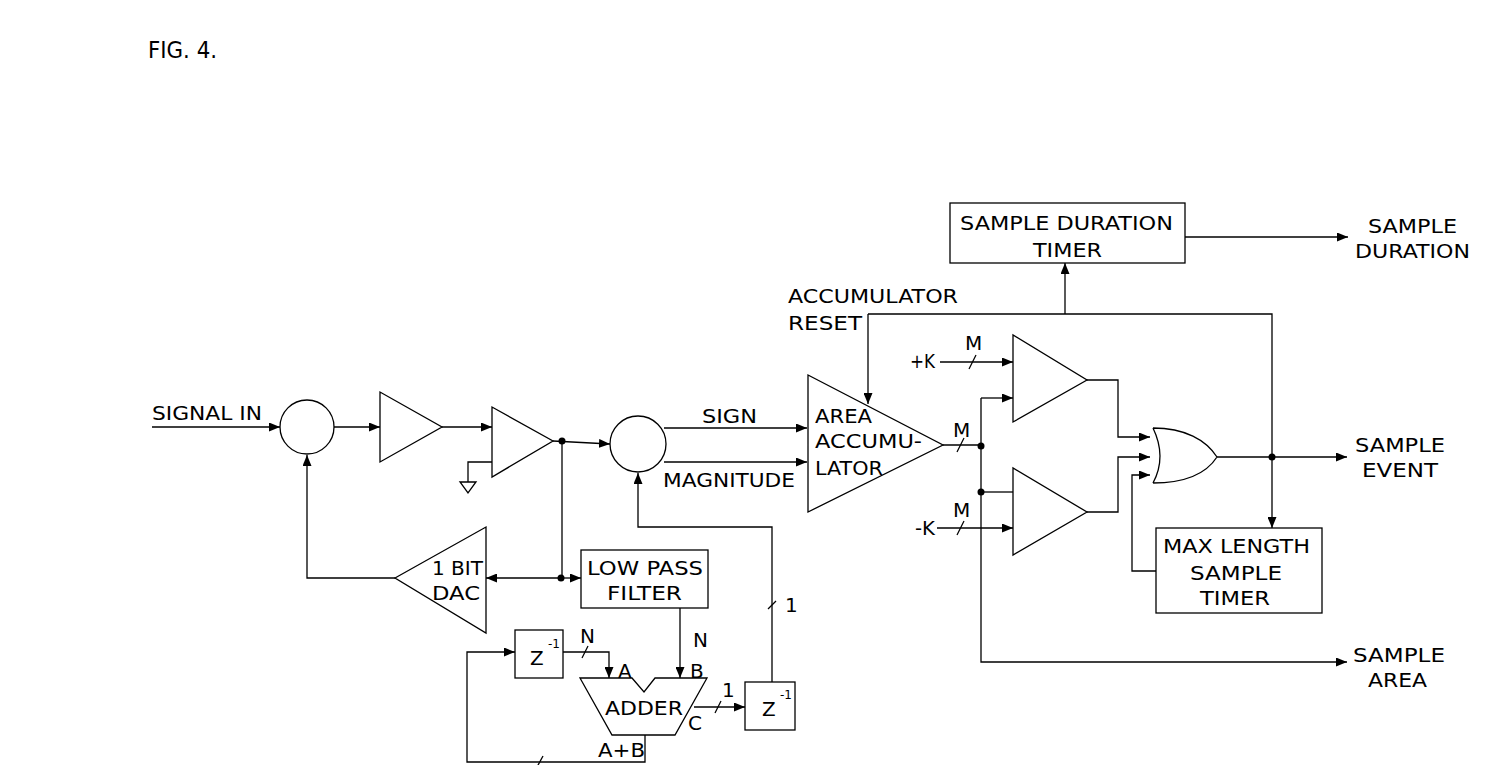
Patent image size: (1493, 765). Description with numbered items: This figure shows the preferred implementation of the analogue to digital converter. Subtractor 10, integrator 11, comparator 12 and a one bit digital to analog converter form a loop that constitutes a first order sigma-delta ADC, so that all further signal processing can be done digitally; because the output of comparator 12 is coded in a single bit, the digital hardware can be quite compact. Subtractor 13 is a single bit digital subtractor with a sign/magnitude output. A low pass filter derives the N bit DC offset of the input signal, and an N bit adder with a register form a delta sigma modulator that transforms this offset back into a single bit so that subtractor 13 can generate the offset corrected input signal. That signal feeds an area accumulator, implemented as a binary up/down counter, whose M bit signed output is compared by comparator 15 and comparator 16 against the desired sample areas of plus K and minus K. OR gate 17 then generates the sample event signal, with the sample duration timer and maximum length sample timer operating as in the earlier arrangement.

The subtractor 10 is at (305, 396).
The integrator 11 is at (382, 381).
The comparator 12 is at (493, 401).
The subtractor 13 is at (637, 414).
The comparator 15 is at (1065, 362).
The comparator 16 is at (1065, 494).
The OR gate 17 is at (1181, 426).